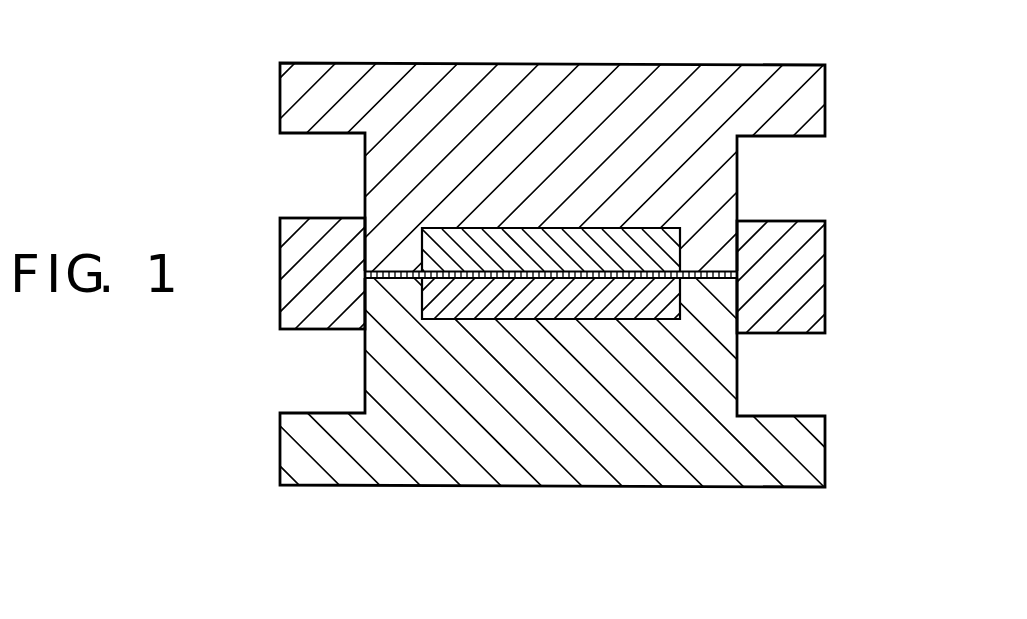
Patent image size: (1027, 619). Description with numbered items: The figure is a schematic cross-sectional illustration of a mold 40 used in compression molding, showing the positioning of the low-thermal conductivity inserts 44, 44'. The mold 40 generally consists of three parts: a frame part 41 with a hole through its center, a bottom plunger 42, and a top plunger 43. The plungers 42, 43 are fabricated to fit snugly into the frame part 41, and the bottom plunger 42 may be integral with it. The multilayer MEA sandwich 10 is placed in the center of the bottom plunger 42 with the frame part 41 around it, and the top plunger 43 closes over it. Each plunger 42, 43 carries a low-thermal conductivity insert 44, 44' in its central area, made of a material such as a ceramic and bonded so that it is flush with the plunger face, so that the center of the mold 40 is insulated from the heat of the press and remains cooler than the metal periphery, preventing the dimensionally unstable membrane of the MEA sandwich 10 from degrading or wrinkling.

The mold 40 is at (641, 506).
The top plunger 43 is at (504, 73).
The bottom plunger 42 is at (479, 472).
The frame part 41 is at (279, 218).
The low-thermal conductivity insert 44 is at (524, 144).
The low-thermal conductivity insert 44' is at (554, 410).
The multilayer MEA sandwich 10 is at (707, 280).